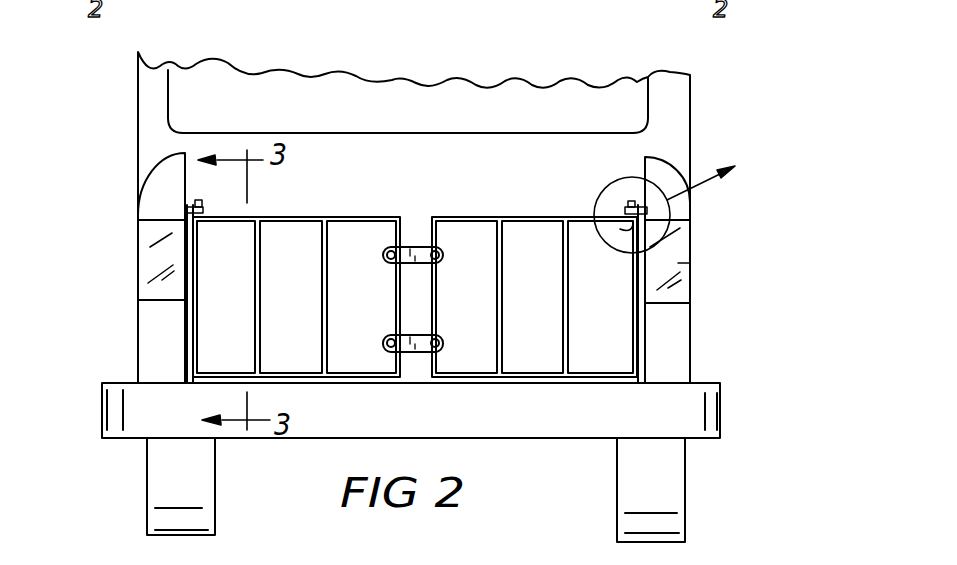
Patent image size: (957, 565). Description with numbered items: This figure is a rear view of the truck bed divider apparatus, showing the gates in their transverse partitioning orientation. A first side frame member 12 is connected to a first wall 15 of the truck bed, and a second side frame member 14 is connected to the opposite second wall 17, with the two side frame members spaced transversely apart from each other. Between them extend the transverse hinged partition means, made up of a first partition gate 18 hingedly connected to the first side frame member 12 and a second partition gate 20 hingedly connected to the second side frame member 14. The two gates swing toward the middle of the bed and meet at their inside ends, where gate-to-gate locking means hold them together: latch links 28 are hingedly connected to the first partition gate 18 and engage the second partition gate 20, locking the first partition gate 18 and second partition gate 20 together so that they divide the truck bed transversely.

The first side frame member 12 is at (188, 318).
The second side frame member 14 is at (645, 318).
The first wall 15 is at (162, 260).
The second wall 17 is at (690, 263).
The first partition gate 18 is at (292, 218).
The second partition gate 20 is at (535, 217).
The latch links 28 is at (420, 247).